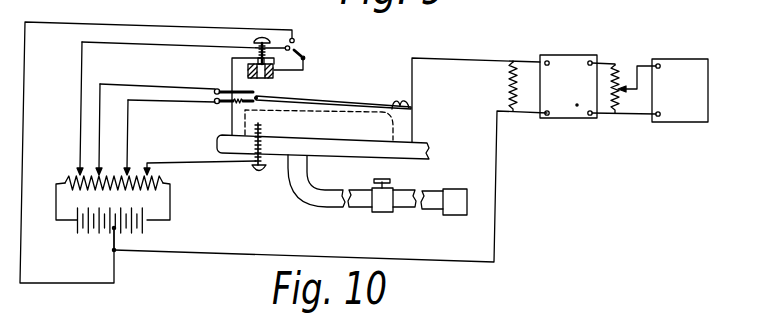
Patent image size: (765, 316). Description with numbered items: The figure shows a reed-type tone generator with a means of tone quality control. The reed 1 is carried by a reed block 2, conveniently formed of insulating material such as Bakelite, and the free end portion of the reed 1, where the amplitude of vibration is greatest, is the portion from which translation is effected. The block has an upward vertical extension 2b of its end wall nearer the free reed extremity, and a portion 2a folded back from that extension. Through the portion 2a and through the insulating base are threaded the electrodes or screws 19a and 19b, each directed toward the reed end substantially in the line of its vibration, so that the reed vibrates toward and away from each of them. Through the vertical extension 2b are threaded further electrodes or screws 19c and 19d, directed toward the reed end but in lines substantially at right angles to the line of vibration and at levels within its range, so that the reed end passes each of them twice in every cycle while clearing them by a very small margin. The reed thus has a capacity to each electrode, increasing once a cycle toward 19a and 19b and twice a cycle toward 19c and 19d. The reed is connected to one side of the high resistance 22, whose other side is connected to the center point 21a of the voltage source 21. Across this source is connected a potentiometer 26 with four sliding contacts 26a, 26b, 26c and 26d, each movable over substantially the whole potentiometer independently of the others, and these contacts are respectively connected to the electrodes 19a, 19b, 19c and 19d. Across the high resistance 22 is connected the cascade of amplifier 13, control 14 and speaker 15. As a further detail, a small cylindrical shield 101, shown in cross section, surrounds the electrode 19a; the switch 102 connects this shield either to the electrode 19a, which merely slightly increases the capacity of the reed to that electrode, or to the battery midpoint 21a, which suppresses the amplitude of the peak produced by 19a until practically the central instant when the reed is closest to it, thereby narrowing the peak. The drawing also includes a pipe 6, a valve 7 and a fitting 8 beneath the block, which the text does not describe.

The reed 1 is at (313, 94).
The reed block 2 is at (400, 128).
The folded-back portion 2a is at (247, 63).
The upward vertical extension 2b is at (236, 82).
The elbow pipe 6 is at (305, 203).
The valve 7 is at (382, 212).
The fitting block 8 is at (450, 216).
The amplifier 13 is at (567, 118).
The control 14 is at (615, 107).
The speaker 15 is at (678, 122).
The electrode or screw 19a is at (268, 37).
The electrode or screw 19b is at (257, 172).
The electrode or screw 19c is at (216, 104).
The electrode or screw 19d is at (216, 86).
The voltage source 21 is at (85, 233).
The center point of voltage source 21a is at (112, 232).
The high resistance 22 is at (508, 84).
The potentiometer 26 is at (66, 189).
The sliding contact 26a is at (80, 169).
The sliding contact 26b is at (151, 173).
The sliding contact 26c is at (127, 169).
The sliding contact 26d is at (100, 172).
The cylindrical shield 101 is at (270, 82).
The switch 102 is at (307, 46).